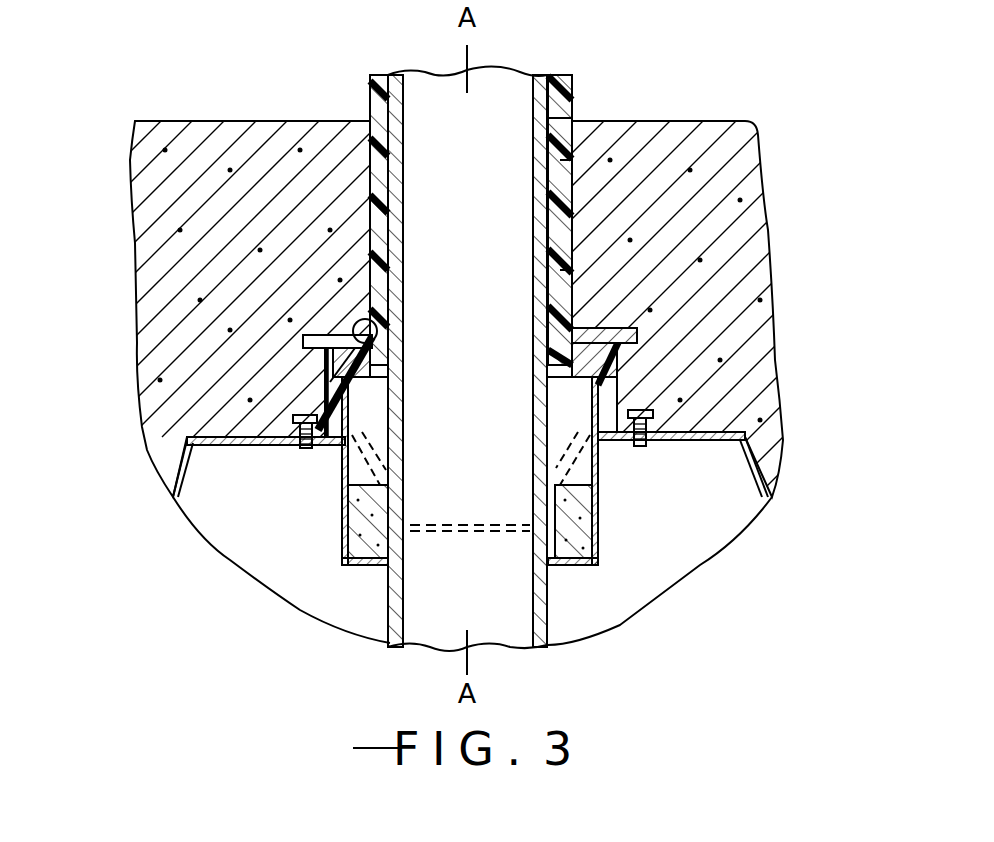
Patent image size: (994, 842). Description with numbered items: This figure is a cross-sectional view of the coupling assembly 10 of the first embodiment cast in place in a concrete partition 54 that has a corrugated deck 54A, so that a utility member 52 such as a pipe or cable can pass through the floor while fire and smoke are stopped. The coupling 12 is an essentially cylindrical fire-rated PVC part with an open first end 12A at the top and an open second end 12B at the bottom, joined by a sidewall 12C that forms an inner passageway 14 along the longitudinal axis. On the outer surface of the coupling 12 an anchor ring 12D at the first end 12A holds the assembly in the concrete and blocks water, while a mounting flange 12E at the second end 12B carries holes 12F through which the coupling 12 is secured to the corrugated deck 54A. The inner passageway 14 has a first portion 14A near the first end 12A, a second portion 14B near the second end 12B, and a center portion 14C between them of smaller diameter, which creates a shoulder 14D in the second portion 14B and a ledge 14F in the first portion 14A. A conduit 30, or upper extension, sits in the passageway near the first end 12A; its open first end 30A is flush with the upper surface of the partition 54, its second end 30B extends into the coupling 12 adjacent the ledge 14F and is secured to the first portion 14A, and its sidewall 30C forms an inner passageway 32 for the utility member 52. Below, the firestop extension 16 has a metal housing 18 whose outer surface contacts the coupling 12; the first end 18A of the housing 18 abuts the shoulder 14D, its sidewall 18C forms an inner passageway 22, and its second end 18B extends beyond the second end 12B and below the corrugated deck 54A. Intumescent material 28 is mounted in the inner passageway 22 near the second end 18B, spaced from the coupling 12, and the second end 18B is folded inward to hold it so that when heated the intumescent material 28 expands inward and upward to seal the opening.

The coupling assembly 10 is at (632, 506).
The coupling 12 is at (605, 380).
The first end 12A is at (590, 325).
The second end 12B is at (620, 442).
The sidewall 12C is at (640, 342).
The anchor ring 12D is at (650, 335).
The mounting flange 12E is at (740, 435).
The holes 12F is at (645, 437).
The inner passageway 14 is at (495, 248).
The first portion 14A is at (355, 305).
The second portion 14B is at (355, 407).
The center portion 14C is at (397, 376).
The shoulder 14D is at (325, 350).
The ledge 14F is at (378, 335).
The firestop extension 16 is at (598, 530).
The housing 18 is at (333, 452).
The first end 18A is at (655, 418).
The second end 18B is at (600, 572).
The sidewall 18C is at (333, 483).
The inner passageway 22 is at (340, 508).
The intumescent material 28 is at (605, 630).
The conduit 30 is at (575, 120).
The first end 30A is at (570, 118).
The second end 30B is at (568, 270).
The sidewall 30C is at (580, 158).
The inner passageway 32 is at (560, 120).
The utility member 52 is at (550, 78).
The concrete partition 54 is at (140, 194).
The corrugated deck 54A is at (173, 485).